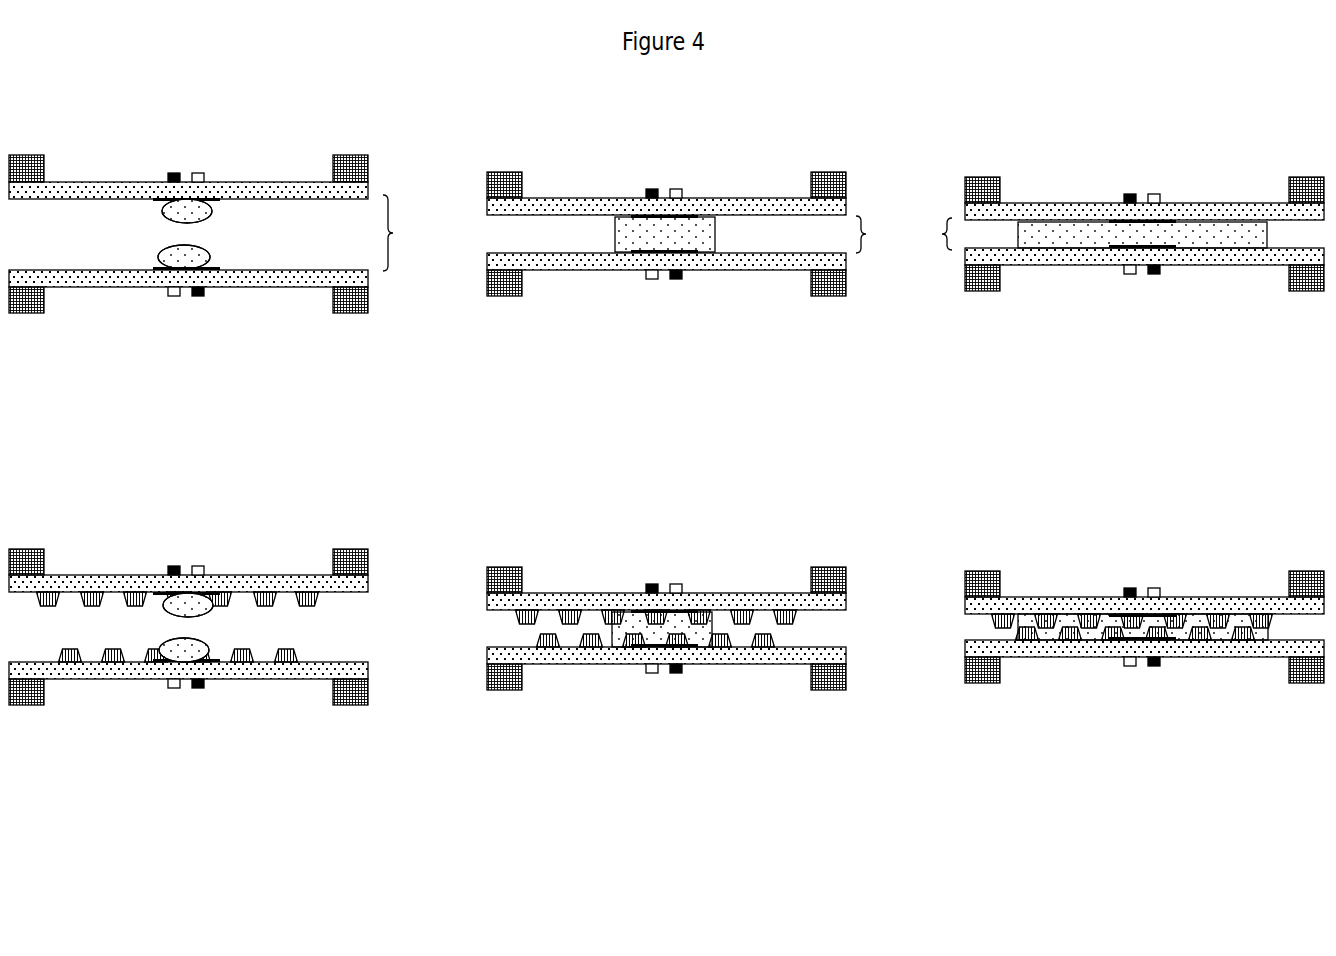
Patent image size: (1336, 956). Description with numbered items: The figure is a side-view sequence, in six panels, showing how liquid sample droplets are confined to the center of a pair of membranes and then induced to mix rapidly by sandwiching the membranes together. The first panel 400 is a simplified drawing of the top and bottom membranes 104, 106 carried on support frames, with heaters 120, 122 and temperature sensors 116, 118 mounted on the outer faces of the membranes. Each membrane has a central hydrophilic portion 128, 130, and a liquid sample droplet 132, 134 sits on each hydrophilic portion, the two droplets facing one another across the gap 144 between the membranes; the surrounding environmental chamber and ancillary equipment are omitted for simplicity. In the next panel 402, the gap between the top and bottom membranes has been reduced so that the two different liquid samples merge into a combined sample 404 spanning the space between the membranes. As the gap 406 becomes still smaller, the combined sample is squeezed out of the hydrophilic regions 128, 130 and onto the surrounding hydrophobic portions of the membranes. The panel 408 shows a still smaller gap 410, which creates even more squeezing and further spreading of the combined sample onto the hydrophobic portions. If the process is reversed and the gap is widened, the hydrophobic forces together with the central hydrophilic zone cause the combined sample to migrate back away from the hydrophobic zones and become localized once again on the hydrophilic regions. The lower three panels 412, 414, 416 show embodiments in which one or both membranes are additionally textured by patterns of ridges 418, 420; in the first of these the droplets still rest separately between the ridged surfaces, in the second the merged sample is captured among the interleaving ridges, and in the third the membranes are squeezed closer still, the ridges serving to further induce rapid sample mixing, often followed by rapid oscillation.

The simplified drawing of top and bottom membranes 400 is at (83, 100).
The top membrane 104 is at (259, 192).
The bottom membrane 106 is at (245, 273).
The temperature sensor 116 is at (202, 165).
The temperature sensor 118 is at (167, 307).
The heater 120 is at (166, 167).
The heater 122 is at (202, 308).
The central hydrophilic portion 128 is at (154, 206).
The central hydrophilic portion 130 is at (154, 262).
The sample droplet 132 is at (177, 221).
The sample droplet 134 is at (189, 253).
The gap 144 is at (408, 233).
The merged sample panel 402 is at (517, 100).
The combined sample 404 is at (603, 233).
The gap 406 is at (880, 233).
The further squeezed panel 408 is at (1017, 93).
The still smaller gap 410 is at (943, 233).
The textured membrane embodiment 412 is at (92, 488).
The textured membrane embodiment 414 is at (562, 490).
The textured membrane embodiment 416 is at (1046, 497).
The ridges 418 is at (316, 613).
The ridges 420 is at (62, 648).